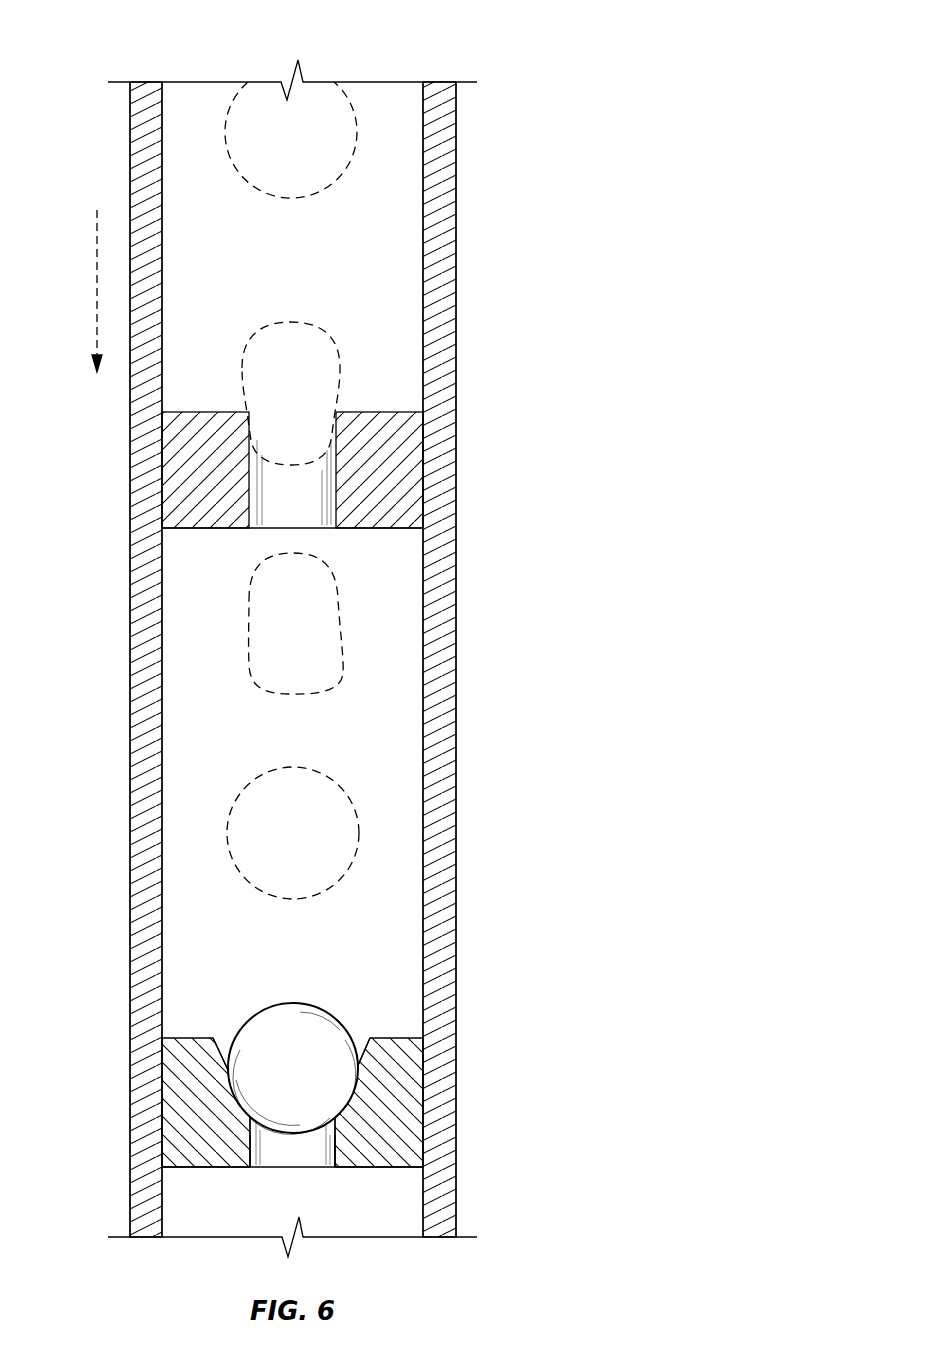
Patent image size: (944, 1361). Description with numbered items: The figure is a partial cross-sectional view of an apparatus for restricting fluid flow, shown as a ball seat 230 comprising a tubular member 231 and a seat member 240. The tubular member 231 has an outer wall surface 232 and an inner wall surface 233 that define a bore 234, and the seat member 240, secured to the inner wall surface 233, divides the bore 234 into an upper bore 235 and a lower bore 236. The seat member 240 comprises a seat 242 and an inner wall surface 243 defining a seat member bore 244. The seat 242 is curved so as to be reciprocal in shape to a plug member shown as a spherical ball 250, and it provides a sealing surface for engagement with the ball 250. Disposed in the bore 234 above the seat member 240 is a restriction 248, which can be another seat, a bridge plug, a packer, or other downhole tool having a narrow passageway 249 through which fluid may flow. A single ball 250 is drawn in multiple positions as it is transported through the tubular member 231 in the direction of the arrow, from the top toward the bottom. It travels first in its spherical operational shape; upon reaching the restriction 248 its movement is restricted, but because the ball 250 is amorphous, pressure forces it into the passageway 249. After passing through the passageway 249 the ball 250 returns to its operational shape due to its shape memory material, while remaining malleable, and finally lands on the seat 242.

The ball seat 230 is at (510, 45).
The tubular member 231 is at (445, 200).
The outer wall surface 232 is at (457, 252).
The inner wall surface 233 is at (163, 235).
The bore 234 is at (316, 268).
The upper bore 235 is at (183, 943).
The lower bore 236 is at (183, 1203).
The seat member 240 is at (408, 1073).
The seat 242 is at (352, 1105).
The inner wall surface 243 is at (252, 1153).
The seat member bore 244 is at (318, 1153).
The restriction 248 is at (405, 487).
The passageway 249 is at (316, 503).
The ball 250 is at (316, 137).